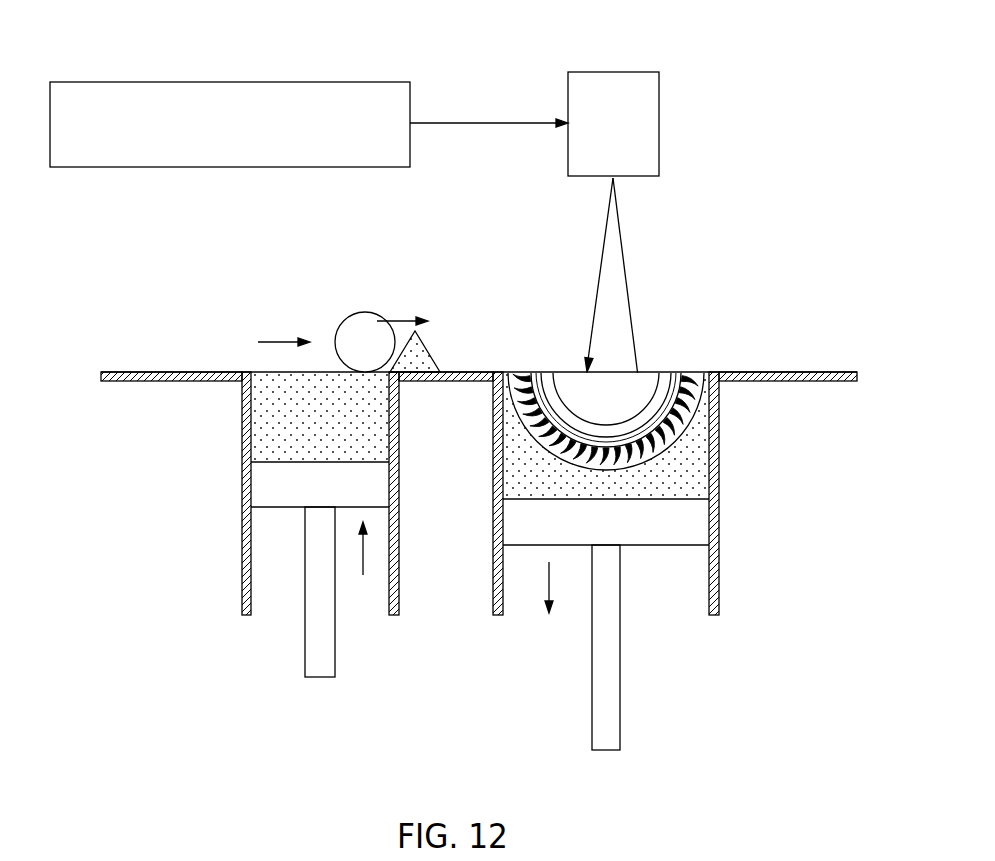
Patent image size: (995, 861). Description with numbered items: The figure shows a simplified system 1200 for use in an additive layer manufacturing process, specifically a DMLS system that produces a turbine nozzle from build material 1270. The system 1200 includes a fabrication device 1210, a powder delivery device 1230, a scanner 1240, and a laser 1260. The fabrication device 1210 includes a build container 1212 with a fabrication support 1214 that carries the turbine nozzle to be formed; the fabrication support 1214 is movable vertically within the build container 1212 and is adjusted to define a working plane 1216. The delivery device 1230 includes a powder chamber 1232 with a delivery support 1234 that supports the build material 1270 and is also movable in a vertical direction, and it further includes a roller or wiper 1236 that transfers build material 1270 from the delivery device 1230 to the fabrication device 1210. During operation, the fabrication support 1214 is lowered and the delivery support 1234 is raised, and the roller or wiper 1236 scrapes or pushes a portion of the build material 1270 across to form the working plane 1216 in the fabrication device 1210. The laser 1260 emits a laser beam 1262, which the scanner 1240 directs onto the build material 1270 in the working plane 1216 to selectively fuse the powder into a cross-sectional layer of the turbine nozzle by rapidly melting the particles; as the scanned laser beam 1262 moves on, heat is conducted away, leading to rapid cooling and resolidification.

The system 1200 is at (770, 90).
The fabrication device 1210 is at (755, 500).
The build container 1212 is at (718, 400).
The fabrication support 1214 is at (712, 522).
The working plane 1216 is at (683, 372).
The powder delivery device 1230 is at (157, 474).
The powder chamber 1232 is at (246, 432).
The delivery support 1234 is at (251, 489).
The roller or wiper 1236 is at (367, 312).
The scanner 1240 is at (614, 72).
The laser 1260 is at (236, 82).
The laser beam 1262 is at (488, 122).
The build material 1270 is at (256, 410).